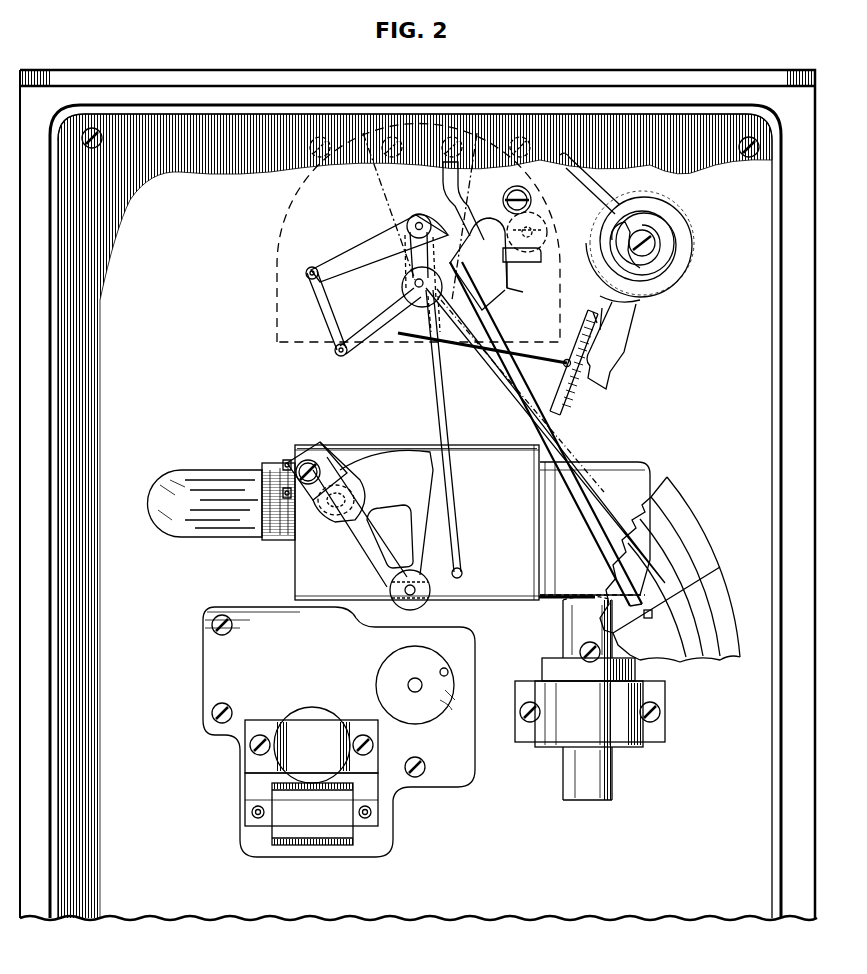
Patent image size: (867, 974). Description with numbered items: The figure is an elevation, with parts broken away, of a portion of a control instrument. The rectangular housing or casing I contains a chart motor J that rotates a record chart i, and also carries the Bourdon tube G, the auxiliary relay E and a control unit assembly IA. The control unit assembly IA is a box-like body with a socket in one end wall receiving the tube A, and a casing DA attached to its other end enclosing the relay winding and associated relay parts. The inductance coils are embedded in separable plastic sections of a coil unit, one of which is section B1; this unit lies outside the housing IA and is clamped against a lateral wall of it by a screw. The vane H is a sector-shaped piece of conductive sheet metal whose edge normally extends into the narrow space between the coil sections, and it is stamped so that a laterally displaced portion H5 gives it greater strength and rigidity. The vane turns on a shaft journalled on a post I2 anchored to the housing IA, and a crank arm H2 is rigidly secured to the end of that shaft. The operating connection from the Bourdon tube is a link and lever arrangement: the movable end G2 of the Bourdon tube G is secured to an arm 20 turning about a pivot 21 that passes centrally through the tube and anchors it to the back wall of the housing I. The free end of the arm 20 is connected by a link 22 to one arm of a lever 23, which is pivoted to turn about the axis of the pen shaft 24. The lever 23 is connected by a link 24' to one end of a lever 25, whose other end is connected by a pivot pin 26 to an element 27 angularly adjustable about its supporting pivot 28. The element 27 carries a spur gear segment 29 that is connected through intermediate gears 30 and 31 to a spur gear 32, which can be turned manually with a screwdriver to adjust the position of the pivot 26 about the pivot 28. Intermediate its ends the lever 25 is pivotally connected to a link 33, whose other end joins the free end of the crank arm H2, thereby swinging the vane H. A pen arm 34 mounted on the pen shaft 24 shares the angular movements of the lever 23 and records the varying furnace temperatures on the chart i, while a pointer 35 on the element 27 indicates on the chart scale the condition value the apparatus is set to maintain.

The instrument casing I is at (135, 68).
The control unit assembly IA is at (302, 432).
The tube A is at (221, 468).
The coil unit section B1 is at (340, 468).
The vane H is at (394, 463).
The laterally displaced vane portion H5 is at (385, 512).
The crank arm H2 is at (455, 574).
The post I2 is at (394, 590).
The chart motor J is at (310, 714).
The auxiliary relay E is at (578, 640).
The relay casing DA is at (620, 462).
The record chart i is at (681, 493).
The Bourdon tube G is at (688, 214).
The movable end of Bourdon tube G2 is at (636, 303).
The arm 20 is at (606, 378).
The pivot 21 is at (652, 247).
The link 22 is at (521, 362).
The lever 23 is at (345, 255).
The pen shaft 24 is at (413, 212).
The link 24' is at (315, 311).
The lever 25 is at (367, 335).
The pivot pin 26 is at (515, 266).
The adjustable element 27 is at (478, 230).
The supporting pivot 28 is at (416, 306).
The spur gear segment 29 is at (462, 183).
The intermediate gear 30 is at (540, 230).
The intermediate gear 31 is at (542, 212).
The spur gear 32 is at (531, 198).
The link 33 is at (446, 425).
The pen arm 34 is at (596, 535).
The pointer 35 is at (497, 381).